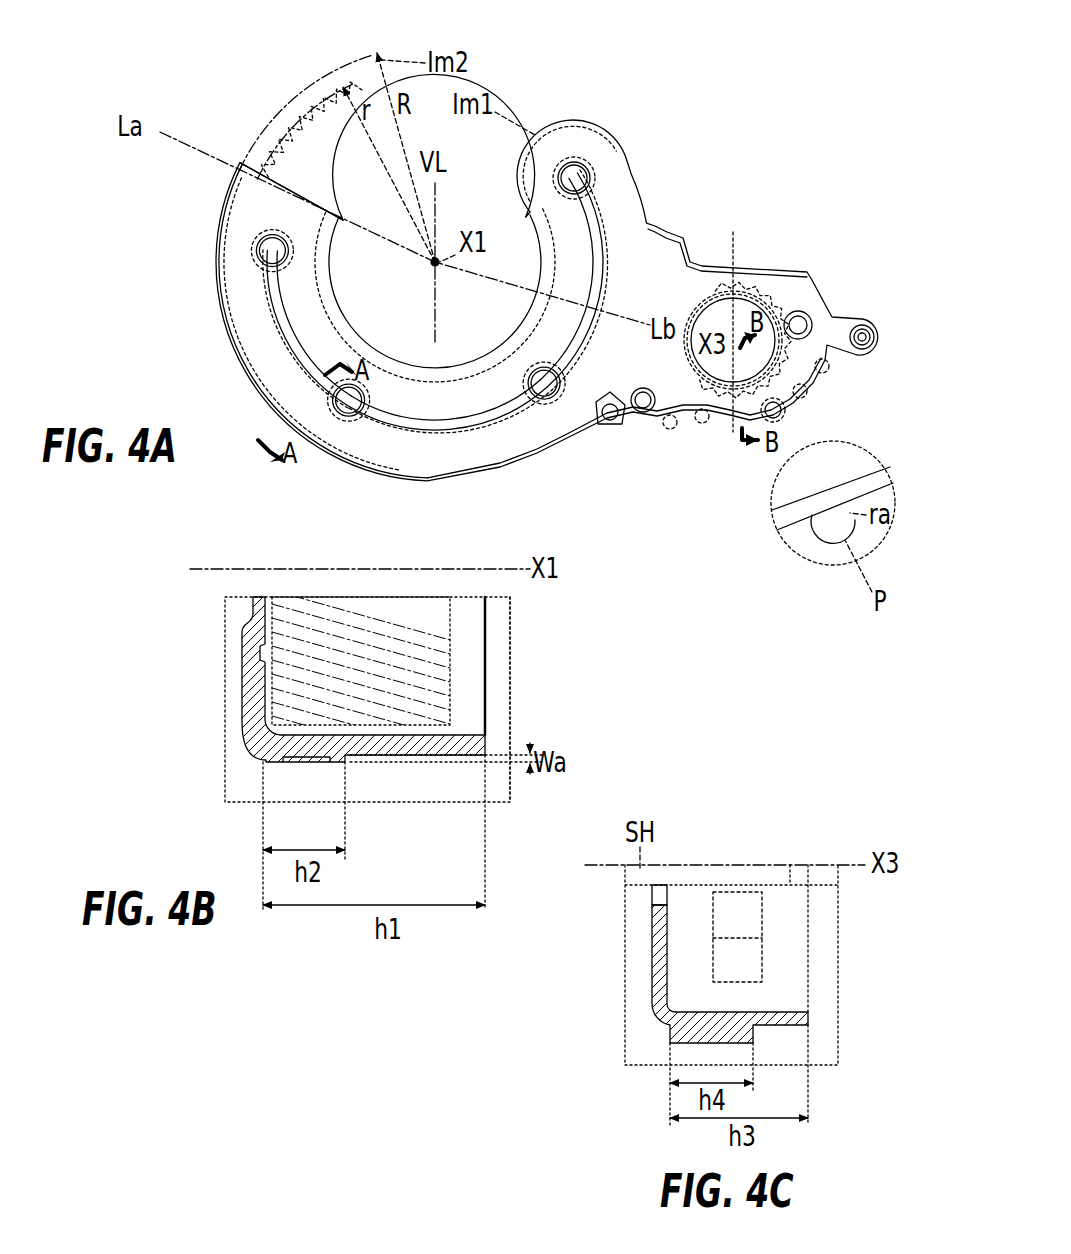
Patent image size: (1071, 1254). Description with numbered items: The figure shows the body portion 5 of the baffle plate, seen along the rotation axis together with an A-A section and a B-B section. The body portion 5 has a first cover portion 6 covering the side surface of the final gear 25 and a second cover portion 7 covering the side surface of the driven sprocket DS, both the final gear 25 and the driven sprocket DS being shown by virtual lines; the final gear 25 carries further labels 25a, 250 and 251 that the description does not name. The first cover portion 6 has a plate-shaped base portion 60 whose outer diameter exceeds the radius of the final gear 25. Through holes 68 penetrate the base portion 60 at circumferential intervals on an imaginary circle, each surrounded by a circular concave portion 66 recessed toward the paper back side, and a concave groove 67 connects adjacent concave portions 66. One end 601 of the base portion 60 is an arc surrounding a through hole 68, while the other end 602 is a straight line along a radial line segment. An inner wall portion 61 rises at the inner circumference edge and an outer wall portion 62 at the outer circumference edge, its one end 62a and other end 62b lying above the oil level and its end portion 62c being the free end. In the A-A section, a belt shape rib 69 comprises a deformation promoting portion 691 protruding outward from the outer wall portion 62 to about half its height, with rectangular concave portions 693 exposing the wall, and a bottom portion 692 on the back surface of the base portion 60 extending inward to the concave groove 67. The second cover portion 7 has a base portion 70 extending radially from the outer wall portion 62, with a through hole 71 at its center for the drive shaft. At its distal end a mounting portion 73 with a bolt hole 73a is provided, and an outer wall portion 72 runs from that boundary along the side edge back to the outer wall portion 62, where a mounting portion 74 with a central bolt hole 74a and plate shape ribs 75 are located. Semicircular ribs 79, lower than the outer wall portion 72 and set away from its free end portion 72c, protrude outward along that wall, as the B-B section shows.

In FIG. 4A, the body portion 5 is at (782, 108).
In FIG. 4A, the first cover portion 6 is at (645, 195).
In FIG. 4A, the second cover portion 7 is at (760, 255).
In FIG. 4A, the final gear 25 is at (260, 170).
In FIG. 4B, the final gear 25 is at (372, 597).
In FIG. 4B, the ring gear end face 25a is at (266, 652).
In FIG. 4A, the pitch circle of ring gear 250 is at (305, 118).
In FIG. 4A, the tip circle of ring gear 251 is at (338, 78).
In FIG. 4A, the base portion 60 is at (232, 250).
In FIG. 4B, the base portion 60 is at (250, 605).
In FIG. 4A, the inner wall portion 61 is at (342, 283).
In FIG. 4A, the outer wall portion 62 is at (224, 222).
In FIG. 4B, the outer wall portion 62 is at (403, 760).
In FIG. 4A, the one end of the outer wall portion 62a is at (660, 245).
In FIG. 4A, the other end of the outer wall portion 62b is at (236, 178).
In FIG. 4B, the end portion of the outer wall portion 62c is at (487, 716).
In FIG. 4A, the one end of the base portion 601 is at (585, 122).
In FIG. 4A, the other end of the base portion 602 is at (300, 196).
In FIG. 4A, the concave portions 66 is at (280, 272).
In FIG. 4A, the concave groove 67 is at (292, 337).
In FIG. 4B, the concave groove 67 is at (258, 654).
In FIG. 4A, the through holes 68 is at (573, 162).
In FIG. 4A, the belt shape rib 69 is at (226, 330).
In FIG. 4B, the belt shape rib 69 is at (160, 712).
In FIG. 4B, the deformation promoting portion 691 is at (264, 761).
In FIG. 4B, the bottom portion 692 is at (245, 720).
In FIG. 4B, the concave portions (slits) 693 is at (300, 766).
In FIG. 4A, the base portion 70 is at (806, 300).
In FIG. 4C, the base portion 70 is at (650, 945).
In FIG. 4A, the through hole 71 is at (705, 364).
In FIG. 4C, the through hole 71 is at (650, 900).
In FIG. 4A, the outer wall portion 72 is at (680, 418).
In FIG. 4C, the outer wall portion 72 is at (785, 1012).
In FIG. 4C, the end portion of the outer wall portion 72c is at (810, 1020).
In FIG. 4A, the mounting portion 73 is at (840, 318).
In FIG. 4A, the bolt hole 73a is at (866, 325).
In FIG. 4A, the mounting portion 74 is at (610, 394).
In FIG. 4A, the bolt hole 74a is at (617, 426).
In FIG. 4A, the plate shape ribs 75 is at (563, 455).
In FIG. 4A, the ribs 79 is at (730, 424).
In FIG. 4C, the ribs 79 is at (695, 1012).
In FIG. 4A, the driven sprocket DS is at (730, 266).
In FIG. 4C, the driven sprocket DS is at (763, 920).